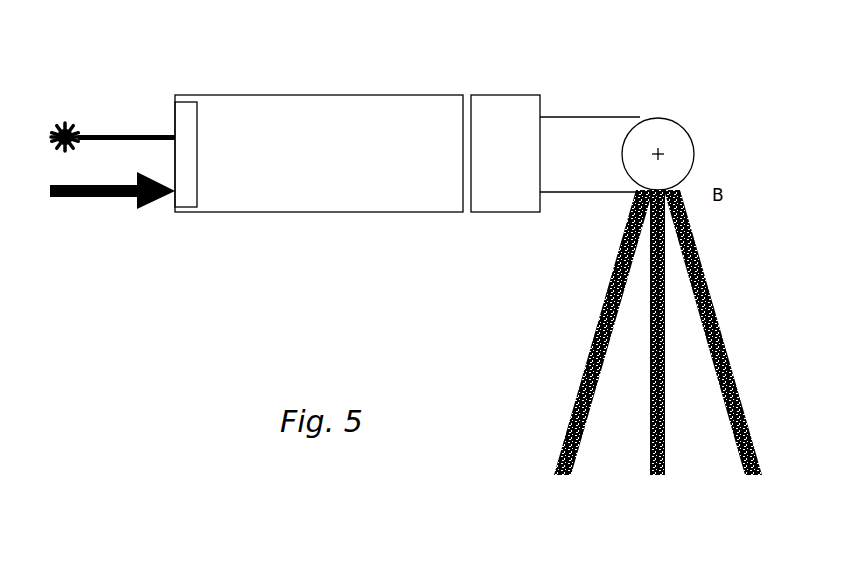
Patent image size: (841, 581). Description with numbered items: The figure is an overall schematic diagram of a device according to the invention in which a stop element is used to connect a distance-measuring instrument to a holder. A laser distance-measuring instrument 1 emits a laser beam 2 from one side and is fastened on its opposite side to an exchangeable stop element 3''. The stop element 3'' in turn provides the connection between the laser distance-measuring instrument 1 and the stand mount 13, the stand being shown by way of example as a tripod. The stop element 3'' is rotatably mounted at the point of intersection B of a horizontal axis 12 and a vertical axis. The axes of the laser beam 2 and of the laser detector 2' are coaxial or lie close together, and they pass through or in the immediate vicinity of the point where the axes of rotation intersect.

The laser distance-measuring instrument 1 is at (319, 113).
The laser beam 2 is at (118, 87).
The laser detector 2' is at (147, 240).
The stop element 3'' is at (537, 119).
The horizontal axis 12 is at (642, 122).
The stand mount 13 is at (605, 332).